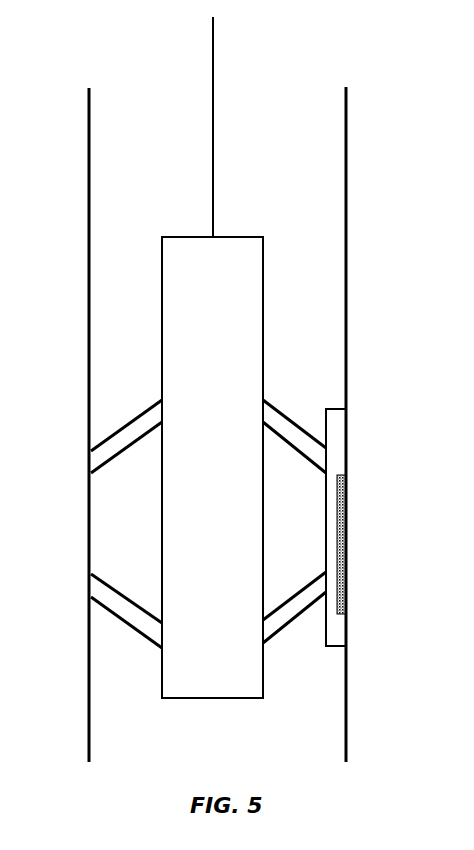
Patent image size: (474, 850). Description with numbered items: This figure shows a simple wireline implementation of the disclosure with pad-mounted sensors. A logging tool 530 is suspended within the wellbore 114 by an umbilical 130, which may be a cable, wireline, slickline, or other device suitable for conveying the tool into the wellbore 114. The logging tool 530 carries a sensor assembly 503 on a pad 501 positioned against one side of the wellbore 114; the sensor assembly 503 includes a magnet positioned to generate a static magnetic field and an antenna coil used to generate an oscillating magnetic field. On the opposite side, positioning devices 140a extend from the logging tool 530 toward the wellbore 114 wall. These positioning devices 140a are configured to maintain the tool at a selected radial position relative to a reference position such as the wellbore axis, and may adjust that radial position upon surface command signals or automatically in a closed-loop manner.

The wellbore 114 is at (348, 145).
The umbilical 130 is at (213, 80).
The logging tool 530 is at (249, 300).
The positioning device 140a is at (104, 442).
The pad 501 is at (338, 425).
The sensor assembly 503 is at (345, 505).